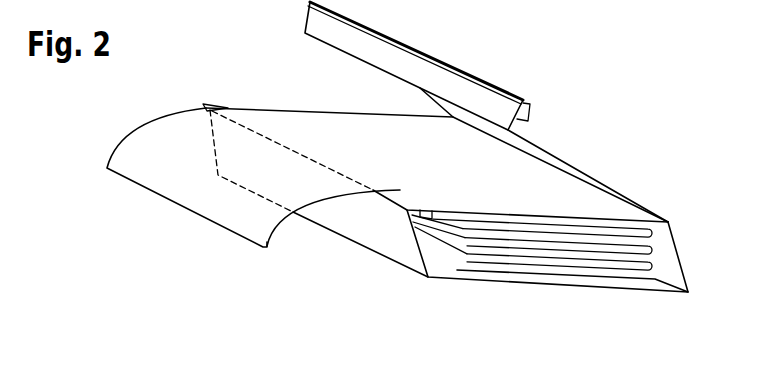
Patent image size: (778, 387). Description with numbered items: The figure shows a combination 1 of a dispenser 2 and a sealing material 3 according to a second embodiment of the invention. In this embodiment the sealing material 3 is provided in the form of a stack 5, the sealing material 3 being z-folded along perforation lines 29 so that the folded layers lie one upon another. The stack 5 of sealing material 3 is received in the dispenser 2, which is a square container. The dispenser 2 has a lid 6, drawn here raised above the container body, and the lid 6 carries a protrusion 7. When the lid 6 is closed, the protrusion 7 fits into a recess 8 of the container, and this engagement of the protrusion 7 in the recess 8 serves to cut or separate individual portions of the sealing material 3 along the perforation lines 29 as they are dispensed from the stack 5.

The combination 1 is at (625, 110).
The dispenser 2 is at (562, 287).
The sealing material 3 is at (241, 218).
The stack 5 is at (489, 252).
The perforation lines 29 is at (451, 250).
The lid 6 is at (478, 124).
The protrusion 7 is at (526, 118).
The recess 8 is at (428, 212).